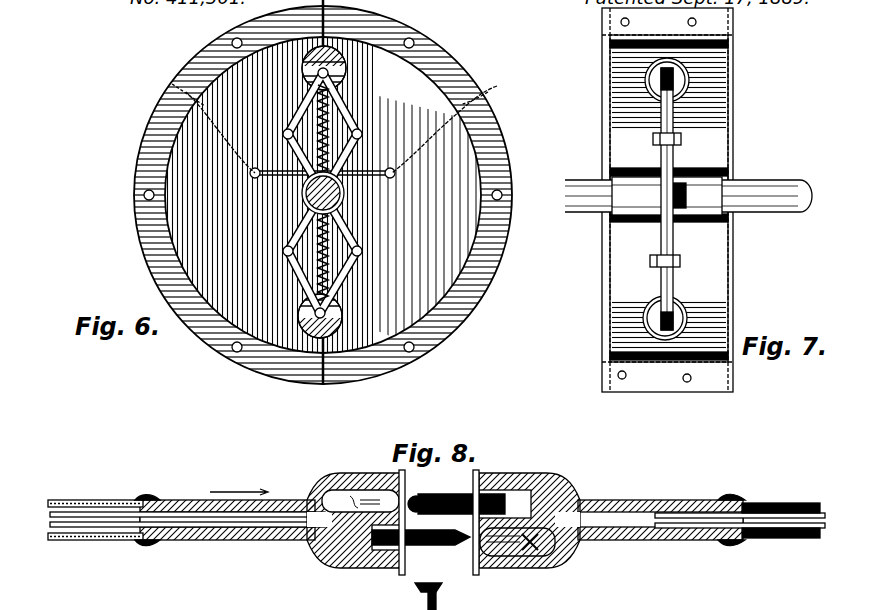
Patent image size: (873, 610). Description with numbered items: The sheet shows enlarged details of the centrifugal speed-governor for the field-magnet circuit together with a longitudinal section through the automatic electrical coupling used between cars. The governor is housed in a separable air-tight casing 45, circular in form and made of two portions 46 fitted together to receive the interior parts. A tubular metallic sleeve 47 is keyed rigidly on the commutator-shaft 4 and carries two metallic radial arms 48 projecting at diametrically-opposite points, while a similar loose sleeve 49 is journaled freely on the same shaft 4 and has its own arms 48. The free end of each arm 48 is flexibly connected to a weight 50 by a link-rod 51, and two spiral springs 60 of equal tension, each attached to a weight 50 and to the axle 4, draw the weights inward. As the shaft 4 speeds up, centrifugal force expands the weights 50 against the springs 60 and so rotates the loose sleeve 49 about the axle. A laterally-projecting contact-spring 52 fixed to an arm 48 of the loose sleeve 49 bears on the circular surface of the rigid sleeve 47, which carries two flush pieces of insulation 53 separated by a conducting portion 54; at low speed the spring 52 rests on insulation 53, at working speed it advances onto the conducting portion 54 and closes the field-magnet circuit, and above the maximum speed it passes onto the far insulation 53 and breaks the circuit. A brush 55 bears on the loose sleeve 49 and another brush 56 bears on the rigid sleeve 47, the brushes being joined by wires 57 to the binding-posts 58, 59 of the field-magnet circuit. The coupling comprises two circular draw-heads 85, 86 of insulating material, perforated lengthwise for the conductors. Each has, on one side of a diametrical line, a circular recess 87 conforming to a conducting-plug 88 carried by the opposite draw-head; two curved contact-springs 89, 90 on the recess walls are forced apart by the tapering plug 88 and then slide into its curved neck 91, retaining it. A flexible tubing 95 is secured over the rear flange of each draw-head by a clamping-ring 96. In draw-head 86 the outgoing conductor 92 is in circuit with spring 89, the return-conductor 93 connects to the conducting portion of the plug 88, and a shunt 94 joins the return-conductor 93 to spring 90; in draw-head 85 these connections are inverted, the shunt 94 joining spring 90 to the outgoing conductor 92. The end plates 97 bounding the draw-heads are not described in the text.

In FIG. 7, the commutator-shaft 4 is at (790, 192).
In FIG. 6, the separable air-tight casing 45 is at (317, 192).
In FIG. 6, the casing portion 46 is at (140, 212).
In FIG. 7, the casing portion 46 is at (667, 200).
In FIG. 6, the tubular metallic sleeve 47 is at (345, 198).
In FIG. 7, the tubular metallic sleeve 47 is at (697, 222).
In FIG. 6, the radial arm 48 is at (283, 242).
In FIG. 7, the radial arm 48 is at (676, 176).
In FIG. 7, the loose tubular sleeve 49 is at (633, 222).
In FIG. 6, the weight 50 is at (347, 73).
In FIG. 7, the weight 50 is at (690, 80).
In FIG. 6, the link-rod 51 is at (292, 262).
In FIG. 7, the link-rod 51 is at (673, 280).
In FIG. 6, the contact-spring 52 is at (292, 172).
In FIG. 7, the contact-spring 52 is at (660, 180).
In FIG. 7, the insulation piece 53 is at (667, 196).
In FIG. 7, the conducting portion 54 is at (692, 176).
In FIG. 6, the brush 55 is at (303, 196).
In FIG. 6, the brush 56 is at (391, 168).
In FIG. 6, the wire 57 is at (210, 135).
In FIG. 6, the binding-post 58 is at (176, 86).
In FIG. 6, the binding-post 59 is at (483, 91).
In FIG. 6, the spiral spring 60 is at (334, 192).
In FIG. 8, the draw-head 85 is at (548, 484).
In FIG. 8, the draw-head 86 is at (353, 504).
In FIG. 8, the circular recess 87 is at (522, 570).
In FIG. 8, the conducting-plug 88 is at (456, 523).
In FIG. 8, the contact-spring 89 is at (533, 545).
In FIG. 8, the contact-spring 90 is at (445, 526).
In FIG. 8, the neck 91 is at (421, 522).
In FIG. 8, the outgoing conductor 92 is at (690, 496).
In FIG. 8, the return-conductor 93 is at (186, 540).
In FIG. 8, the shunt 94 is at (305, 500).
In FIG. 8, the flexible tubing 95 is at (780, 506).
In FIG. 8, the clamping-ring 96 is at (152, 496).
In FIG. 8, the plate 97 is at (402, 575).